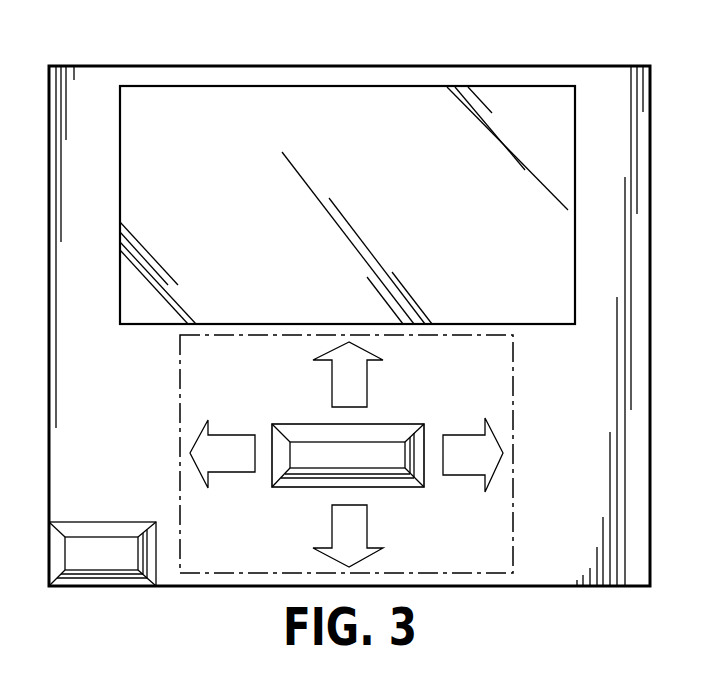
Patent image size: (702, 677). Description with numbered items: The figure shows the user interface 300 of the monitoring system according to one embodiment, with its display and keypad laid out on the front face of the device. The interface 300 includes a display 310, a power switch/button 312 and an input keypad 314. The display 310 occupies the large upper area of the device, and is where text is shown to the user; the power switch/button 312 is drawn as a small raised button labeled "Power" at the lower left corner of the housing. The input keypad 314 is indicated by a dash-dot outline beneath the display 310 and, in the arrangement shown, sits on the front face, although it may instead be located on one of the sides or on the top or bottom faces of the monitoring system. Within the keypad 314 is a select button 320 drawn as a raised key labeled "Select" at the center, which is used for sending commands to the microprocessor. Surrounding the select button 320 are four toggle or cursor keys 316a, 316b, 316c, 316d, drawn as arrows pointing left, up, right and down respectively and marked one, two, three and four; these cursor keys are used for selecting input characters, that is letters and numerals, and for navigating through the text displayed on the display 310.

The user interface 300 is at (105, 592).
The display 310 is at (155, 95).
The power switch/button 312 is at (120, 528).
The input keypad 314 is at (513, 378).
The toggle or cursor key 316a is at (227, 434).
The toggle or cursor key 316b is at (367, 375).
The toggle or cursor key 316c is at (463, 473).
The toggle or cursor key 316d is at (336, 527).
The select button 320 is at (390, 478).